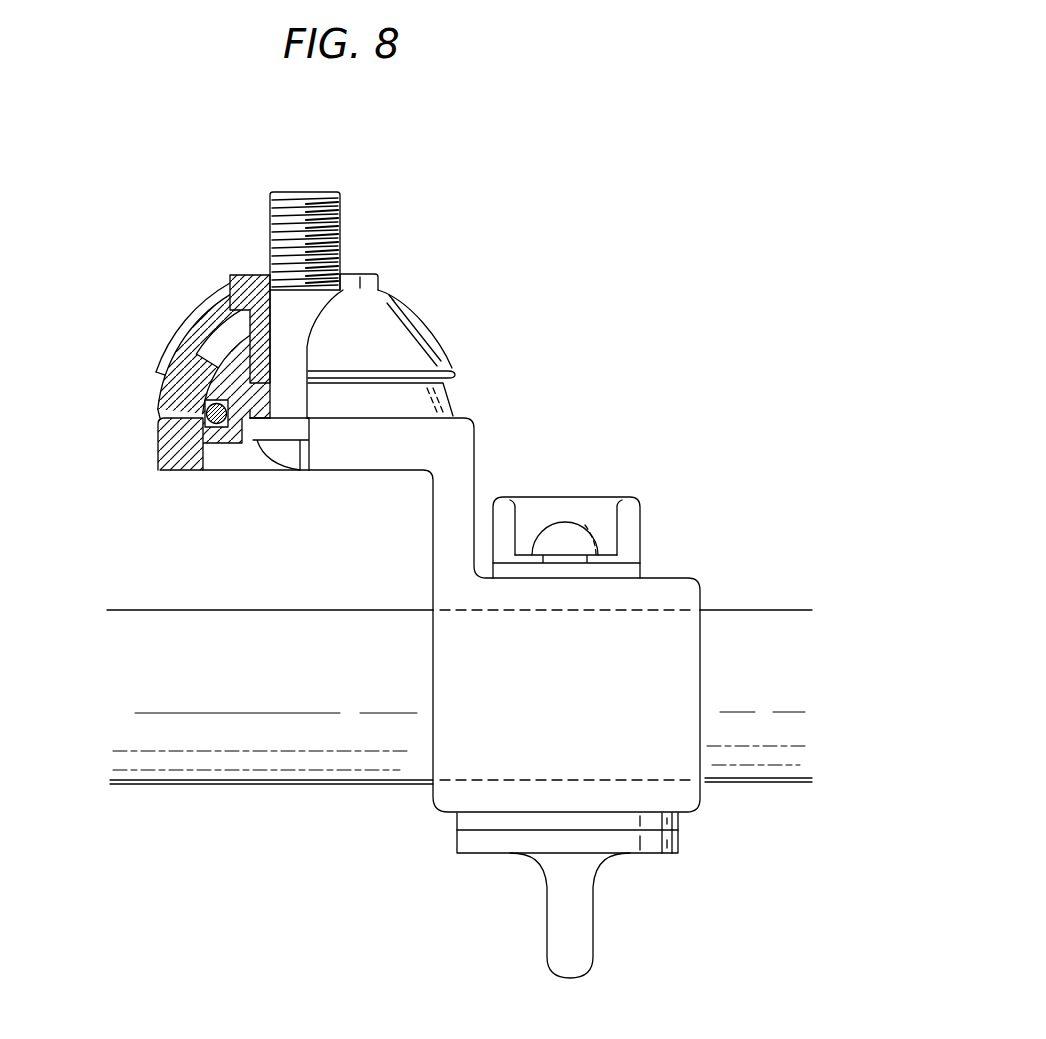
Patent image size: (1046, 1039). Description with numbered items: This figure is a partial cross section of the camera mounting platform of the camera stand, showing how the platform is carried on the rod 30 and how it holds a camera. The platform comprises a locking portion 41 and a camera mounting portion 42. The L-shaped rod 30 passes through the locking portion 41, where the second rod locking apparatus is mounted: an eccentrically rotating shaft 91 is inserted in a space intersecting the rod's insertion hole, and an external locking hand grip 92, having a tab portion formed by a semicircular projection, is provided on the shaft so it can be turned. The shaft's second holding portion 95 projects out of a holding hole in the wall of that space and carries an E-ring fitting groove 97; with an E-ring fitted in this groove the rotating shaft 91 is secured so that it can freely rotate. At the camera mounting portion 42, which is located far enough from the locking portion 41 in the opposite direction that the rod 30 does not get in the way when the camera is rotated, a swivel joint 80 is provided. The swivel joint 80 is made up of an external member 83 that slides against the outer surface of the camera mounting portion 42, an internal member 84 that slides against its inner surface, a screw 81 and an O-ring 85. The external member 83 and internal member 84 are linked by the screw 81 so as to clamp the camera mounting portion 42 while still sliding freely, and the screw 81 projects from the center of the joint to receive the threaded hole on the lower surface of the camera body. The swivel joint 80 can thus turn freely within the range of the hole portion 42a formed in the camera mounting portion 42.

The rod 30 is at (217, 757).
The locking portion 41 is at (447, 792).
The camera mounting portion 42 is at (476, 390).
The hole portion 42a is at (237, 327).
The swivel joint 80 is at (358, 317).
The screw 81 is at (302, 215).
The external member 83 is at (197, 332).
The internal member 84 is at (246, 407).
The O-ring 85 is at (203, 413).
The rotating shaft 91 is at (545, 858).
The locking hand grip 92 is at (580, 928).
The second holding portion 95 is at (563, 527).
The E-ring fitting groove 97 is at (603, 553).